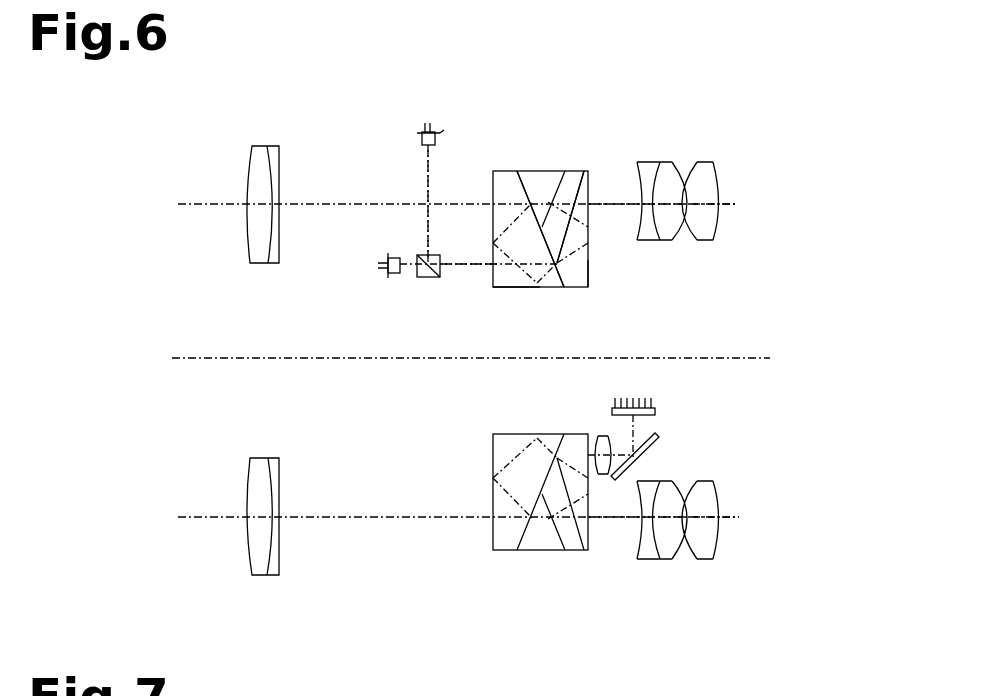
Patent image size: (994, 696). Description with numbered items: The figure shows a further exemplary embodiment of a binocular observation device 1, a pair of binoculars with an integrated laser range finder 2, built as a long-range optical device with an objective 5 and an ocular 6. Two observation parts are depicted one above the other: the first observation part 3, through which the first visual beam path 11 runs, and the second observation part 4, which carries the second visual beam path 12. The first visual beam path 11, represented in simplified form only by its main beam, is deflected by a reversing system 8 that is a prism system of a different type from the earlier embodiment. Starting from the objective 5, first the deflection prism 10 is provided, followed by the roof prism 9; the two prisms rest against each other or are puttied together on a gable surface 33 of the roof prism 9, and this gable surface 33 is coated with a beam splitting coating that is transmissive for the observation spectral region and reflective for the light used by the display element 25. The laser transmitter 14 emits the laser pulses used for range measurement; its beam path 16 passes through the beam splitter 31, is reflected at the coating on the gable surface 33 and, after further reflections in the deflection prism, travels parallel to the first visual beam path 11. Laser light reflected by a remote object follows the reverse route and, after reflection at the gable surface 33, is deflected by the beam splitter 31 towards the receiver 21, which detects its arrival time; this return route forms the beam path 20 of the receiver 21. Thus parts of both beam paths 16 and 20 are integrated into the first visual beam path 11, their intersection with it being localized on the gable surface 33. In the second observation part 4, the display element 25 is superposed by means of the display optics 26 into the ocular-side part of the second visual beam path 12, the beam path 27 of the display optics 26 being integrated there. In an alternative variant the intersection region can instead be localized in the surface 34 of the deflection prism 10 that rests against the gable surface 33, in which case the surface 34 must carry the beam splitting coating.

The observation device 1 is at (748, 570).
The laser range finder 2 is at (437, 108).
The first observation part 3 is at (783, 213).
The second observation part 4 is at (780, 509).
The objective 5 is at (267, 133).
The ocular 6 is at (691, 143).
The reversing system 8 is at (560, 118).
The roof prism 9 is at (590, 298).
The deflection prism 10 is at (519, 298).
The first visual beam path 11 is at (600, 198).
The second visual beam path 12 is at (613, 520).
The laser transmitter 14 is at (375, 273).
The beam path of the laser transmitter 16 is at (472, 268).
The beam path of the receiver 20 is at (426, 213).
The receiver 21 is at (445, 125).
The display element 25 is at (670, 405).
The display optics 26 is at (590, 428).
The beam path of the display optics 27 is at (635, 429).
The beam splitter 31 is at (408, 284).
The gable surface 33 is at (563, 273).
The surface of the deflection prism 34 is at (538, 195).